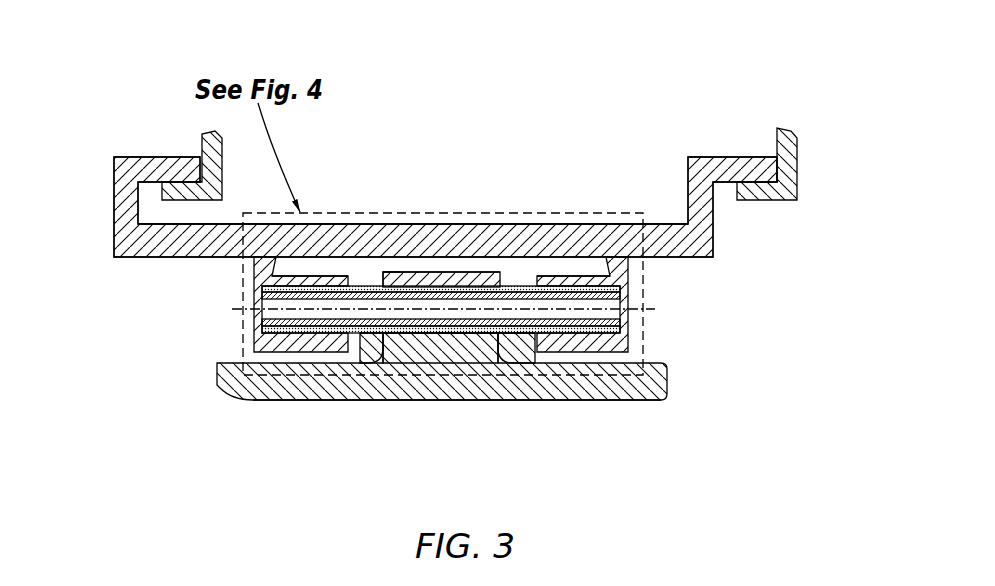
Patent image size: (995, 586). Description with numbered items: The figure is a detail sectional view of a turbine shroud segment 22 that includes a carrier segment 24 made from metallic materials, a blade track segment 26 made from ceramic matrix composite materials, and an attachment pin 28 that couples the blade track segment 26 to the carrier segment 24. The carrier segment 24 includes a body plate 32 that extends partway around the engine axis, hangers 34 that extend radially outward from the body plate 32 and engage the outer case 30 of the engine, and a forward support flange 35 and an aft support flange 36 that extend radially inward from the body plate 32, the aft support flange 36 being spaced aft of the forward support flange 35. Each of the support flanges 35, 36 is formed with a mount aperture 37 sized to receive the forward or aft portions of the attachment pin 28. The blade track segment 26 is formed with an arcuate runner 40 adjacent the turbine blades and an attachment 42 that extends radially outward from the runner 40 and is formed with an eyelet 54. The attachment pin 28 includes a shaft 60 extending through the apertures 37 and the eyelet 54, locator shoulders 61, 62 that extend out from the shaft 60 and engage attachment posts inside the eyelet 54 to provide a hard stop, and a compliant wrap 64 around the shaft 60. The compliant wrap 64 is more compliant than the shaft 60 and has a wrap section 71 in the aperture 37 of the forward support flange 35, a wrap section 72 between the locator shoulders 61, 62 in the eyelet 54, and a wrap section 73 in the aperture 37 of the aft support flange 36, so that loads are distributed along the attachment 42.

The shroud segment 22 is at (173, 112).
The carrier segment 24 is at (610, 222).
The blade track segment 26 is at (637, 409).
The attachment pin 28 is at (630, 324).
The outer case 30 is at (802, 153).
The body plate 32 is at (527, 222).
The hangers 34 is at (113, 199).
The forward support flange 35 is at (255, 273).
The aft support flange 36 is at (630, 268).
The mount aperture 37 is at (332, 276).
The runner 40 is at (568, 401).
The attachment 42 is at (490, 271).
The eyelet 54 is at (455, 271).
The shaft 60 is at (282, 316).
The locator shoulder 61 is at (395, 274).
The locator shoulder 62 is at (500, 292).
The compliant wrap 64 is at (423, 446).
The wrap section 71 is at (357, 343).
The wrap section 72 is at (433, 343).
The wrap section 73 is at (515, 343).